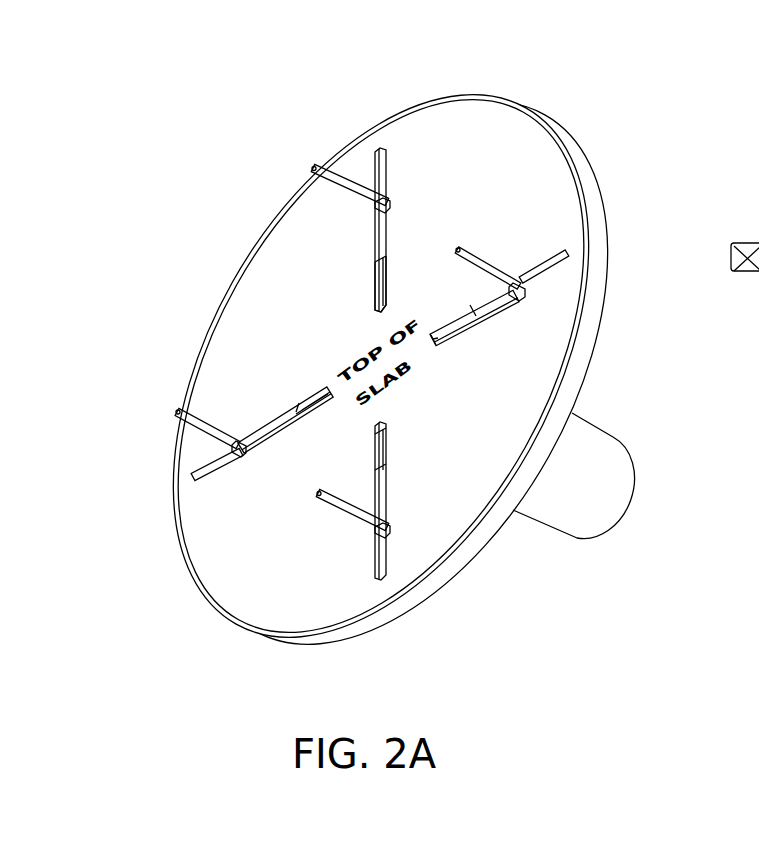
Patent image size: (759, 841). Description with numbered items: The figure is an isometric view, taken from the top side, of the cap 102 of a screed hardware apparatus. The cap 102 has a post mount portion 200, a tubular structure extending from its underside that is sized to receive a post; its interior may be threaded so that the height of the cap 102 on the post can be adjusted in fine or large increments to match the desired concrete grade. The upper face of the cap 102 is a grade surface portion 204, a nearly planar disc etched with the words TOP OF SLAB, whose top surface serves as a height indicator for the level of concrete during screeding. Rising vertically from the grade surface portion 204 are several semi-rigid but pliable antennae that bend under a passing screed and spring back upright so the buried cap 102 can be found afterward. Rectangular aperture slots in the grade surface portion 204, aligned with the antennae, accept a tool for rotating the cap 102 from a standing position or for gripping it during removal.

The cap 102 is at (634, 106).
The post mount portion 200 is at (613, 434).
The grade surface portion 204 is at (592, 222).